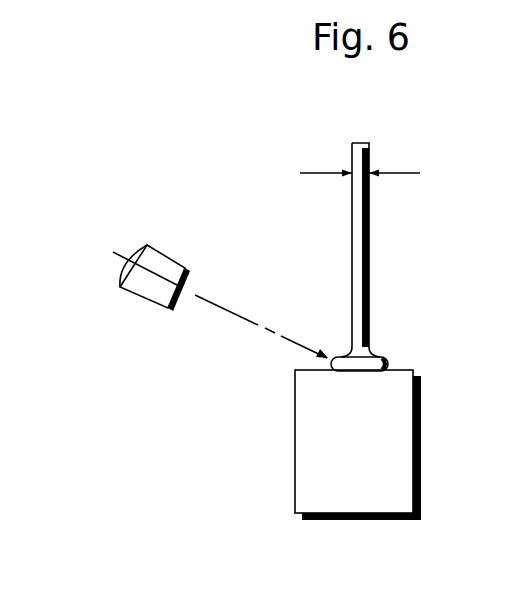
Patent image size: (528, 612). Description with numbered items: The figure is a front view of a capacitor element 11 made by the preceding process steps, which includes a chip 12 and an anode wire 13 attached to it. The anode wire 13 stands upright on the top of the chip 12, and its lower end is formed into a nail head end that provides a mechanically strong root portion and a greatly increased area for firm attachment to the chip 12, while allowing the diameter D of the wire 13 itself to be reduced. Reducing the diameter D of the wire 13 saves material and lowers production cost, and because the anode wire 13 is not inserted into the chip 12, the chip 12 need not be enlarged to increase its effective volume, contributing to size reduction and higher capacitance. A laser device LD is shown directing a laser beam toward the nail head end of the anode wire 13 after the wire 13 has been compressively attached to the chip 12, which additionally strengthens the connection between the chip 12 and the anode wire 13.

The capacitor element 11 is at (384, 331).
The chip 12 is at (421, 437).
The anode wire 13 is at (369, 250).
The diameter D is at (346, 176).
The laser device LD is at (155, 305).